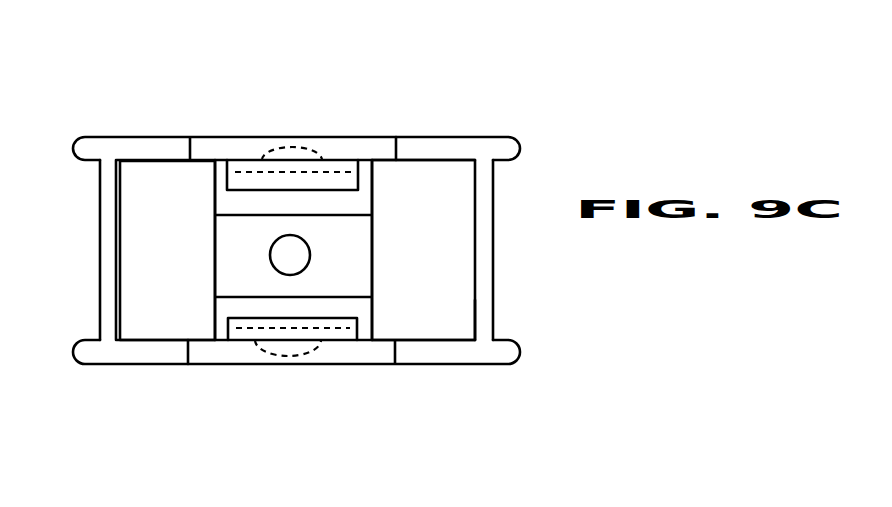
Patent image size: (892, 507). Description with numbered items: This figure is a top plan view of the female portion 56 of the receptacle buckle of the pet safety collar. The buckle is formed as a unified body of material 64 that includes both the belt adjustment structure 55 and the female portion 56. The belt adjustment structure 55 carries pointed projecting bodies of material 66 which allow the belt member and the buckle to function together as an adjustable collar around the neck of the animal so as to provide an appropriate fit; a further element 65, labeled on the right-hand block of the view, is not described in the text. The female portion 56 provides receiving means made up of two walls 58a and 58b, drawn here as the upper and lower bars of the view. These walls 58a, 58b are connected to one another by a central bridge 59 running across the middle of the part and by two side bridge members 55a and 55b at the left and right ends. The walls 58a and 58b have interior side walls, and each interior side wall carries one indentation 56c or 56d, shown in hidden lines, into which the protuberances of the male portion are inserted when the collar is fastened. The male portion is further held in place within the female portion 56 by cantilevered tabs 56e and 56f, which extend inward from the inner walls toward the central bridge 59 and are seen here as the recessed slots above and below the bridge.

The unified body of material 64 is at (358, 108).
The wall 58a is at (457, 137).
The wall 58b is at (165, 352).
The belt adjustment structure 55 is at (487, 322).
The side bridge member 55a is at (485, 272).
The side bridge member 55b is at (107, 263).
The female portion 56 is at (258, 352).
The indentation 56c is at (284, 146).
The indentation 56d is at (305, 340).
The cantilevered tab 56e is at (368, 184).
The cantilevered tab 56f is at (232, 326).
The central bridge 59 is at (355, 302).
The right block 65 is at (428, 208).
The pointed projecting bodies of material 66 is at (208, 256).